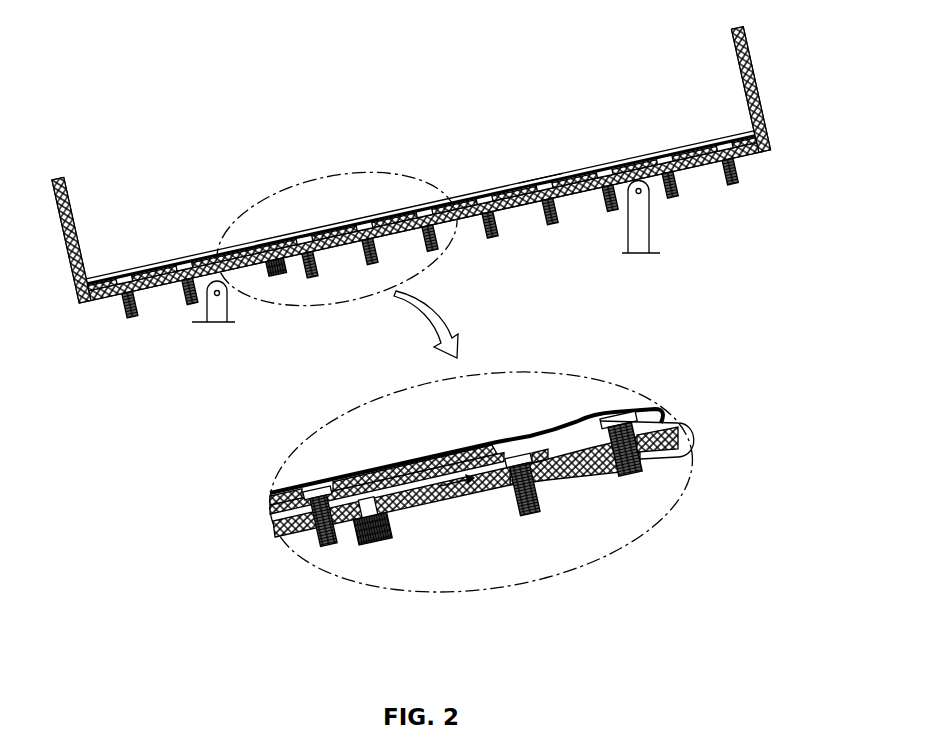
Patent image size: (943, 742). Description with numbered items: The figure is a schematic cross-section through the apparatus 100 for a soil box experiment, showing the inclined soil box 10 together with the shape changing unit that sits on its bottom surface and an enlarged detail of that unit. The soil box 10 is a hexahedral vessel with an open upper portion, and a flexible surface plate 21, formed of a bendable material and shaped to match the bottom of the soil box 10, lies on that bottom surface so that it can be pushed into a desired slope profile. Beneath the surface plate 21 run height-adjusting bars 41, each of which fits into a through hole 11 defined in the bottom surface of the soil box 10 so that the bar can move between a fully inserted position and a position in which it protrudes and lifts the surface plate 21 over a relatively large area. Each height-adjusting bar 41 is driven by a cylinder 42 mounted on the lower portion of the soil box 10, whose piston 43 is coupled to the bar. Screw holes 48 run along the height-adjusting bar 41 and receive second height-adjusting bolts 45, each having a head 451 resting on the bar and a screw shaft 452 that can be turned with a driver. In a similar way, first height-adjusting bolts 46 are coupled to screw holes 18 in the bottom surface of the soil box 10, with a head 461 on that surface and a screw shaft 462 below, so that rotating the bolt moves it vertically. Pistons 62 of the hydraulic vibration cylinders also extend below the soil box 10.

The heating apparatus 100 is at (110, 108).
The soil box 10 is at (752, 55).
The through hole 11 is at (483, 490).
The screw hole 18 is at (533, 205).
The surface plate 21 is at (733, 130).
The height-adjusting bar 41 is at (617, 173).
The cylinder 42 is at (280, 278).
The piston 43 is at (393, 513).
The second height-adjusting bolt 45 is at (733, 174).
The head 451 is at (304, 497).
The screw shaft 452 is at (314, 547).
The first height-adjusting bolt 46 is at (739, 425).
The head 461 is at (676, 421).
The screw shaft 462 is at (675, 452).
The screw hole 48 is at (425, 478).
The piston 62 is at (650, 227).